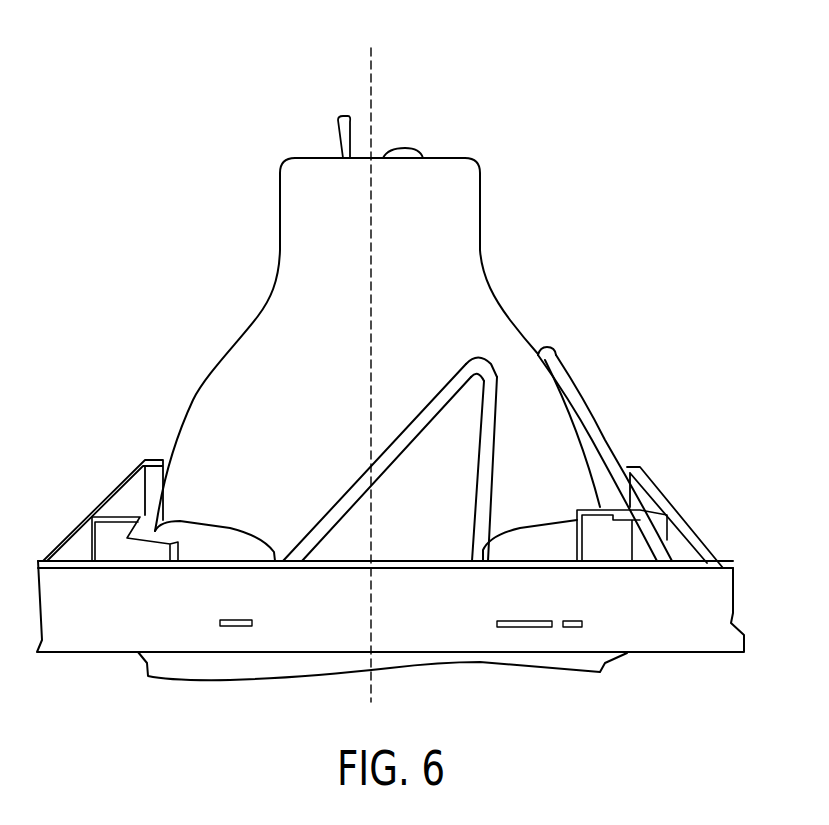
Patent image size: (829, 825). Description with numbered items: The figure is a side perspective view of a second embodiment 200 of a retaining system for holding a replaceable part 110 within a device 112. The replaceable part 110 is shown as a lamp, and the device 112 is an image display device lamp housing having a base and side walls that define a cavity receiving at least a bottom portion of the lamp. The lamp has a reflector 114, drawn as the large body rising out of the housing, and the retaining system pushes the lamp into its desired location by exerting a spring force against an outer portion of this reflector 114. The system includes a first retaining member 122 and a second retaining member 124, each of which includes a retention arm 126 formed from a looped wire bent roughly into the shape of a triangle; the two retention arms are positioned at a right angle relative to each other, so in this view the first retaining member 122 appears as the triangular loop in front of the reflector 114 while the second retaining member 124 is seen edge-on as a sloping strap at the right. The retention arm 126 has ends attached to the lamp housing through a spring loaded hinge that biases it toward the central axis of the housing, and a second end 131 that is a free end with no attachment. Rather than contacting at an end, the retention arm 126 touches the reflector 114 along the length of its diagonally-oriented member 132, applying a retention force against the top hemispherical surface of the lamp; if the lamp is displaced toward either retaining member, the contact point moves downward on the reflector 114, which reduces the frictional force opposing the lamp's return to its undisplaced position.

The second embodiment of a retaining system 200 is at (584, 134).
The replaceable part 110 is at (199, 433).
The device 112 is at (399, 678).
The reflector 114 is at (289, 448).
The first retaining member 122 is at (505, 455).
The second retaining member 124 is at (548, 352).
The retention arm 126 is at (393, 447).
The second end 131 is at (464, 353).
The diagonally-oriented member 132 is at (402, 423).